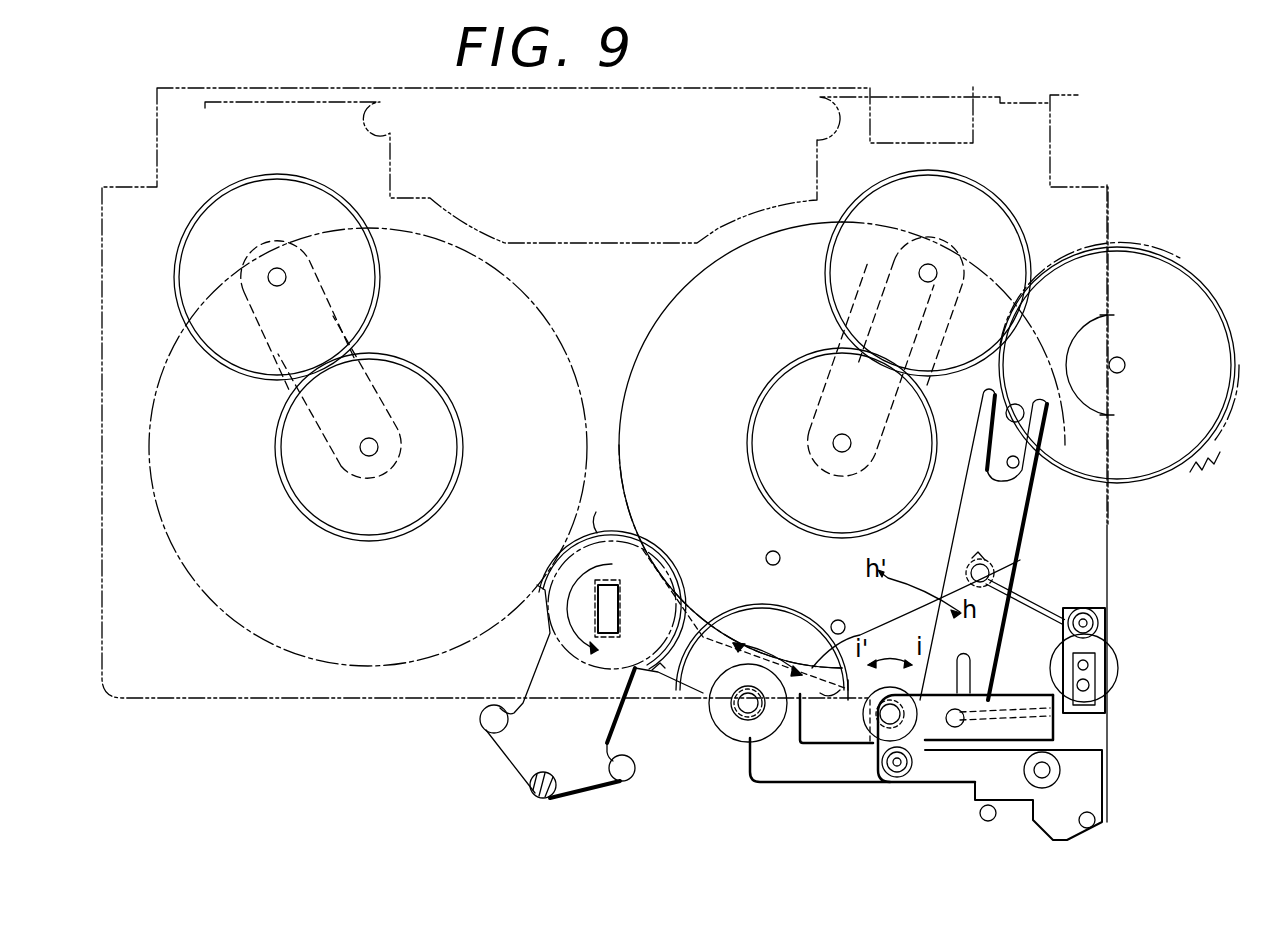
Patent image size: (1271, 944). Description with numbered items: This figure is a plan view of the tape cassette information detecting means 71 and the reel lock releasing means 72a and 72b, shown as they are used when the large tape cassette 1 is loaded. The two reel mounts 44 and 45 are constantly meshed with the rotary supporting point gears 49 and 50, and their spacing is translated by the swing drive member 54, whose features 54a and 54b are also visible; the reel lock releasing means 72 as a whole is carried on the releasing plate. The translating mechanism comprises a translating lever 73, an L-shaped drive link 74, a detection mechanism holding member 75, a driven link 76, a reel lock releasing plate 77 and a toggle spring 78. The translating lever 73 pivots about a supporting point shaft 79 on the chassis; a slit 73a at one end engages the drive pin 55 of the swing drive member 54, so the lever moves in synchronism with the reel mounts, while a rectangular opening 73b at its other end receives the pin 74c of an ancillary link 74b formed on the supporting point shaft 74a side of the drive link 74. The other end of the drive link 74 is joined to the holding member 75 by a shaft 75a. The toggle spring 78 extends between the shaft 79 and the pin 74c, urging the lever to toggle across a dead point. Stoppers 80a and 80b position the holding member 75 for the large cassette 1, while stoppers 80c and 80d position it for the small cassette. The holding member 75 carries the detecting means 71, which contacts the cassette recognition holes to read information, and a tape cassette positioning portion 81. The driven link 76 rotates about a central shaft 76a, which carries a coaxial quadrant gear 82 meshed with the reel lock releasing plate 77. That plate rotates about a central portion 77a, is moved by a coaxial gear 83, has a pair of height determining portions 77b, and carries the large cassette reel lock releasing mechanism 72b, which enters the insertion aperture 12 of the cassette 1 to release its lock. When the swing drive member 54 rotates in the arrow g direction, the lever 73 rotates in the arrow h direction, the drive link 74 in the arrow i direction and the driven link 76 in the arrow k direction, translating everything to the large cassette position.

The large tape cassette 1 is at (1050, 133).
The insertion aperture 12 is at (620, 600).
The reel mount 44 is at (462, 420).
The reel mount 45 is at (755, 410).
The rotary supporting point gear 49 is at (312, 196).
The rotary supporting point gear 50 is at (1008, 212).
The swing drive member 54 is at (1135, 349).
The pulley shaft hole 54a is at (1125, 365).
The pulley teeth 54b is at (1218, 432).
The drive pin 55 is at (1020, 405).
The tape cassette information detecting means 71 is at (1098, 665).
The gear 72 is at (638, 580).
The reel lock releasing means 72a is at (542, 798).
The large tape cassette reel lock releasing mechanism 72b is at (611, 511).
The translating lever 73 is at (1050, 543).
The slit 73a is at (1025, 470).
The rectangular opening 73b is at (970, 667).
The drive link 74 is at (904, 710).
The supporting point shaft 74a is at (893, 780).
The ancillary link 74b is at (880, 770).
The pin 74c is at (1055, 732).
The detection mechanism holding member 75 is at (1053, 795).
The shaft 75a is at (1060, 772).
The driven link 76 is at (799, 754).
The central shaft 76a is at (745, 715).
The reel lock releasing plate 77 is at (567, 690).
The central portion 77a is at (640, 690).
The tape cassette height determining portions 77b is at (650, 784).
The toggle spring 78 is at (1036, 612).
The supporting point shaft 79 is at (995, 578).
The stopper 80a is at (1095, 825).
The stopper 80b is at (982, 820).
The stopper 80c is at (845, 627).
The stopper 80d is at (780, 558).
The tape cassette positioning portion 81 is at (1098, 628).
The quadrant gear 82 is at (798, 612).
The gear 83 is at (673, 560).